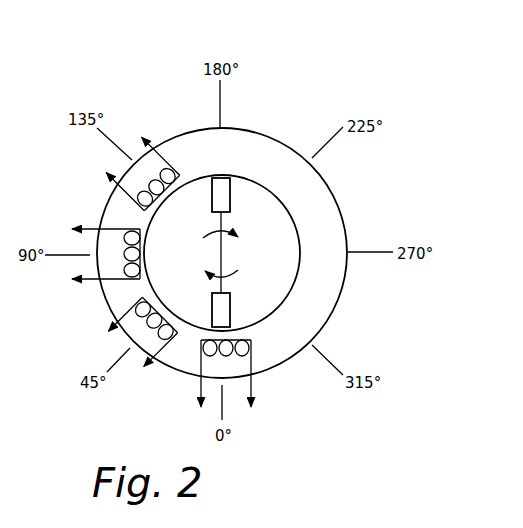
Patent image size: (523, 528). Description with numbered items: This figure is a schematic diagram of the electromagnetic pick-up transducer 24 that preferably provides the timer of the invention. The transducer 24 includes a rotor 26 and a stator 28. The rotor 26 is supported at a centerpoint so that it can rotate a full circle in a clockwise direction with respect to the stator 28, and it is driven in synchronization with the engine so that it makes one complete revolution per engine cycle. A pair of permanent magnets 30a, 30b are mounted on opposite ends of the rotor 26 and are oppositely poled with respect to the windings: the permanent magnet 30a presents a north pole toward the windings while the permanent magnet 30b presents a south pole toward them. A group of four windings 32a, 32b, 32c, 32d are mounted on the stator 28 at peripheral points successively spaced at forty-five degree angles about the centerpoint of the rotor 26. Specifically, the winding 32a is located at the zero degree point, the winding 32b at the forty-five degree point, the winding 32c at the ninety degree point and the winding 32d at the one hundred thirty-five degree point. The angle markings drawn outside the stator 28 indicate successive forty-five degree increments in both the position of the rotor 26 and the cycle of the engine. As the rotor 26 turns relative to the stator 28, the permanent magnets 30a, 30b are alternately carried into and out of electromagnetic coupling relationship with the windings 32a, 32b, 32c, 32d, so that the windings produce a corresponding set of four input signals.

The electromagnetic pick-up transducer 24 is at (180, 124).
The rotor 26 is at (233, 245).
The stator 28 is at (285, 148).
The permanent magnet 30a is at (232, 307).
The permanent magnet 30b is at (212, 191).
The winding 32a is at (255, 343).
The winding 32b is at (180, 348).
The winding 32c is at (132, 283).
The winding 32d is at (178, 172).